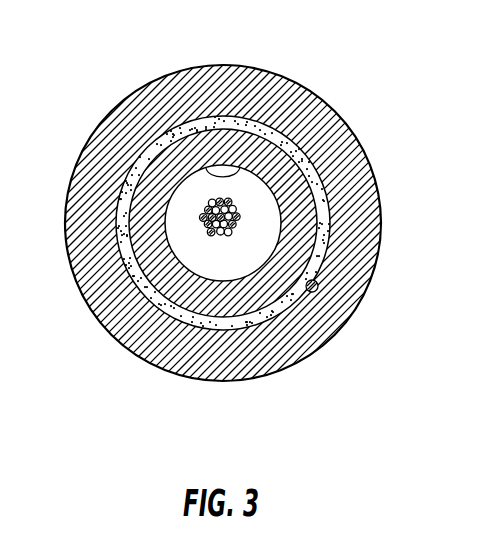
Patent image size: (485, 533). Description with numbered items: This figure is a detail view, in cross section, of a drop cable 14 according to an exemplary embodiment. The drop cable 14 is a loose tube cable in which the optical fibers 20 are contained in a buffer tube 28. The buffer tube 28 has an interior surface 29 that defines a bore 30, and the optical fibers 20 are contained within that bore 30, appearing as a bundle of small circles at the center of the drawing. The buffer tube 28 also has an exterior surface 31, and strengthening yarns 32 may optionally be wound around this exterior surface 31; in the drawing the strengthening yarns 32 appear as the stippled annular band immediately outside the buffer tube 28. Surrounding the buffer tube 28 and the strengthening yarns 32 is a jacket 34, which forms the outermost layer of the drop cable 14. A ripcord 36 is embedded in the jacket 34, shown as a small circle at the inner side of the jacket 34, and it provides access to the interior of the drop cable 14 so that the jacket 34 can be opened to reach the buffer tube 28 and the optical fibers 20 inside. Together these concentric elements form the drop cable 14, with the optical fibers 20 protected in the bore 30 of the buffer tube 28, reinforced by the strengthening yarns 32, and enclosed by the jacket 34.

The drop cable 14 is at (223, 395).
The optical fibers 20 is at (253, 210).
The buffer tube 28 is at (300, 208).
The interior surface 29 is at (230, 172).
The bore 30 is at (288, 180).
The exterior surface 31 is at (146, 149).
The strengthening yarns 32 is at (322, 250).
The jacket 34 is at (313, 335).
The ripcord 36 is at (318, 291).